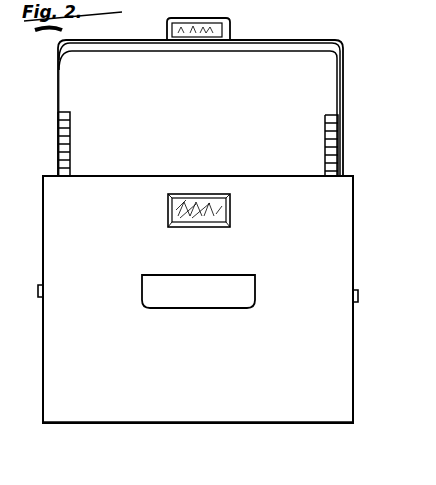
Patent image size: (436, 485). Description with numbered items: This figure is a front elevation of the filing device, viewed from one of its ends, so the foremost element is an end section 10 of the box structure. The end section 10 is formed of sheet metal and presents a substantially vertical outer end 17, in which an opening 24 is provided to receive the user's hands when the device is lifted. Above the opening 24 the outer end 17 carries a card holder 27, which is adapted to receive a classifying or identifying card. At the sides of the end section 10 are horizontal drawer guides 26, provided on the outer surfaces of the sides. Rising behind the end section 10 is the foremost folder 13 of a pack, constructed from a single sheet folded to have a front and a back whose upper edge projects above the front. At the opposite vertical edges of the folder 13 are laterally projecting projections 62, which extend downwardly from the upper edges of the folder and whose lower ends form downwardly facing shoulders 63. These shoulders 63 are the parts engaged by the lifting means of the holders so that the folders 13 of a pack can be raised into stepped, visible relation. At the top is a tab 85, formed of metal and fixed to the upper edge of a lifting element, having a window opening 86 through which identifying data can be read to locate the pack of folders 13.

The end section 10 is at (270, 430).
The folder 13 is at (137, 114).
The outer end 17 is at (198, 374).
The opening 24 is at (198, 291).
The drawer guide 26 is at (38, 296).
The card holder 27 is at (230, 213).
The projection 62 is at (70, 88).
The shoulder 63 is at (62, 143).
The tab 85 is at (232, 30).
The window opening 86 is at (208, 38).